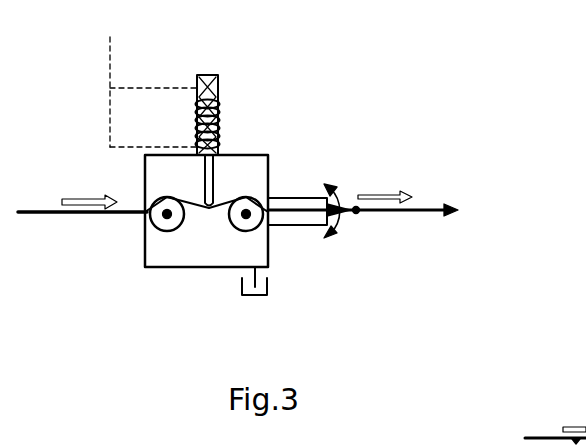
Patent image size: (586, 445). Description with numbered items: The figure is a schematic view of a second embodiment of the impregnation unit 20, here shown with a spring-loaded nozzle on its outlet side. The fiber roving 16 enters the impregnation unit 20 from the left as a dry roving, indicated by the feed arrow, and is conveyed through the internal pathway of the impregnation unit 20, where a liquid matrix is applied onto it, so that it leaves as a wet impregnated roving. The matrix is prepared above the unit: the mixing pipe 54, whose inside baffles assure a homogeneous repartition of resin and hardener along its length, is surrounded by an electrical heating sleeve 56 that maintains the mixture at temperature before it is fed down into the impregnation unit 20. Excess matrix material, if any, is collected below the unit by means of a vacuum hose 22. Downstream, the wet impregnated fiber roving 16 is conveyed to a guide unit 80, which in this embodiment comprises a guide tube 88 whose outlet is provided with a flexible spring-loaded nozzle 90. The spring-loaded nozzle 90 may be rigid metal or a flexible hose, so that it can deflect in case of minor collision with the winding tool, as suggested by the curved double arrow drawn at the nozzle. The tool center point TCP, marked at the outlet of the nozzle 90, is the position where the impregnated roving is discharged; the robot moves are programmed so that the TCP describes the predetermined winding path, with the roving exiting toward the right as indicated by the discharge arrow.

The fiber roving 16 is at (52, 214).
The impregnation unit 20 is at (147, 252).
The vacuum hose 22 is at (248, 300).
The mixing pipe 54 is at (219, 80).
The electrical heating sleeve 56 is at (222, 102).
The guide unit 80 is at (312, 262).
The guide tube 88 is at (290, 196).
The flexible spring-loaded nozzle 90 is at (342, 200).
The tool center point TCP is at (358, 213).